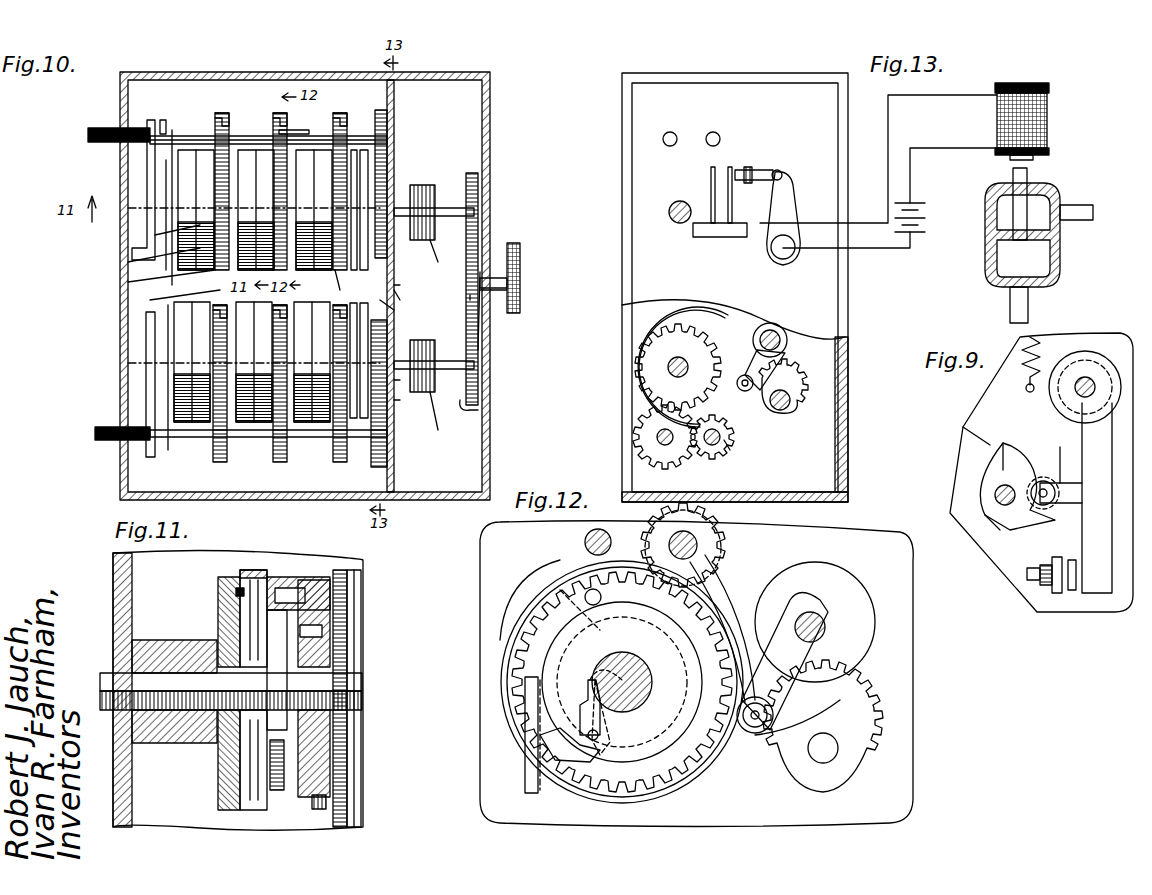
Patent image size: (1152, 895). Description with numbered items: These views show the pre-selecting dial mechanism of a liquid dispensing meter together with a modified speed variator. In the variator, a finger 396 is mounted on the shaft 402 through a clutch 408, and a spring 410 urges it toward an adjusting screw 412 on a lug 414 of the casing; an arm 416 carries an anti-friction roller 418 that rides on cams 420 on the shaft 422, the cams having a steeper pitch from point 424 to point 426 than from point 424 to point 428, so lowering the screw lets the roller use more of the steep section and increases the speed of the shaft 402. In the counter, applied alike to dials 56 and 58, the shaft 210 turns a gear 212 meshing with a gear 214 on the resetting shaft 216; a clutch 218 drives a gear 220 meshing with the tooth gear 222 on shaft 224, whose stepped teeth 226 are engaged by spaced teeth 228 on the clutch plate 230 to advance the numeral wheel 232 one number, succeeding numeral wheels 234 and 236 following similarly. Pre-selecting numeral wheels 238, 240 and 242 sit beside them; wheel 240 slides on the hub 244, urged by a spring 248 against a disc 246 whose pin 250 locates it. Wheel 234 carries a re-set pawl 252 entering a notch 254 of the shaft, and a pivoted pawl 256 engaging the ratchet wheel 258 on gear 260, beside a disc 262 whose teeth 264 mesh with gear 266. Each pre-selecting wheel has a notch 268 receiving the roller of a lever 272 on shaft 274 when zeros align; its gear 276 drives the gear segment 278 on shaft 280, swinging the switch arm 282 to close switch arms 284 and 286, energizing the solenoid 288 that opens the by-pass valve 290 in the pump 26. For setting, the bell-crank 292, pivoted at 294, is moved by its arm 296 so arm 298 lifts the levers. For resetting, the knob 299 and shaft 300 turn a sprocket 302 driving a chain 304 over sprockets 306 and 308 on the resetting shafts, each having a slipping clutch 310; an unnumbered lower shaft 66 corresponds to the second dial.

In FIG. 13, the pump 26 is at (1060, 200).
In FIG. 10, the dial 56 is at (195, 190).
In FIG. 10, the dial 58 is at (190, 347).
In FIG. 10, the lower shaft / gear 66 is at (108, 427).
In FIG. 13, the lower shaft / gear 66 is at (657, 437).
In FIG. 10, the shaft 210 is at (98, 128).
In FIG. 13, the shaft 210 is at (670, 132).
In FIG. 10, the gear 212 is at (394, 110).
In FIG. 10, the gear 214 is at (400, 160).
In FIG. 13, the gear 214 is at (714, 132).
In FIG. 10, the resetting shaft 216 is at (404, 208).
In FIG. 11, the resetting shaft 216 is at (165, 673).
In FIG. 12, the resetting shaft 216 is at (630, 668).
In FIG. 13, the resetting shaft 216 is at (678, 223).
In FIG. 10, the clutch 218 is at (394, 300).
In FIG. 10, the gear 220 is at (340, 275).
In FIG. 10, the tooth gear 222 is at (338, 120).
In FIG. 10, the shaft 224 is at (182, 135).
In FIG. 13, the shaft 224 is at (710, 445).
In FIG. 10, the stepped teeth 226 is at (270, 150).
In FIG. 10, the spaced teeth 228 is at (394, 318).
In FIG. 10, the clutch plate 230 is at (410, 282).
In FIG. 10, the numeral wheel 232 is at (394, 385).
In FIG. 10, the numeral wheel 234 is at (150, 320).
In FIG. 11, the numeral wheel 234 is at (295, 577).
In FIG. 10, the numeral wheel 236 is at (128, 262).
In FIG. 10, the pre-selecting numeral wheel 238 is at (394, 415).
In FIG. 10, the pre-selecting numeral wheel 240 is at (128, 282).
In FIG. 11, the pre-selecting numeral wheel 240 is at (247, 810).
In FIG. 13, the pre-selecting numeral wheel 240 is at (730, 405).
In FIG. 10, the pre-selecting numeral wheel 242 is at (155, 235).
In FIG. 11, the hub 244 is at (245, 715).
In FIG. 11, the disc 246 is at (218, 788).
In FIG. 11, the spring 248 is at (240, 575).
In FIG. 11, the pin 250 is at (236, 592).
In FIG. 11, the re-set pawl 252 is at (280, 760).
In FIG. 12, the re-set pawl 252 is at (588, 690).
In FIG. 12, the notch 254 is at (592, 680).
In FIG. 11, the pivoted pawl 256 is at (330, 620).
In FIG. 12, the pivoted pawl 256 is at (640, 590).
In FIG. 11, the ratchet wheel 258 is at (347, 717).
In FIG. 12, the ratchet wheel 258 is at (690, 770).
In FIG. 10, the gear 260 is at (292, 150).
In FIG. 11, the gear 260 is at (316, 810).
In FIG. 12, the gear 260 is at (638, 785).
In FIG. 11, the disc 262 is at (361, 747).
In FIG. 12, the disc 262 is at (598, 750).
In FIG. 12, the teeth 264 is at (555, 742).
In FIG. 10, the gear 266 is at (305, 440).
In FIG. 13, the gear 266 is at (728, 445).
In FIG. 12, the notch 268 is at (757, 695).
In FIG. 12, the lever 272 is at (812, 652).
In FIG. 13, the lever 272 is at (790, 355).
In FIG. 12, the shaft 274 is at (812, 615).
In FIG. 12, the gear 276 is at (855, 612).
In FIG. 13, the gear 276 is at (795, 322).
In FIG. 12, the gear segment 278 is at (850, 712).
In FIG. 13, the gear segment 278 is at (805, 382).
In FIG. 12, the shaft 280 is at (838, 748).
In FIG. 13, the shaft 280 is at (790, 402).
In FIG. 13, the switch arm 282 is at (788, 195).
In FIG. 13, the switch arm 284 is at (705, 172).
In FIG. 13, the switch arm 286 is at (732, 170).
In FIG. 13, the solenoid 288 is at (1049, 105).
In FIG. 12, the by-pass valve 290 is at (548, 785).
In FIG. 13, the by-pass valve 290 is at (1030, 215).
In FIG. 10, the bell-crank 292 is at (147, 170).
In FIG. 12, the bell-crank 292 is at (540, 583).
In FIG. 10, the pivot 294 is at (163, 120).
In FIG. 12, the arm 296 is at (525, 775).
In FIG. 12, the arm 298 is at (730, 595).
In FIG. 10, the knob 299 is at (512, 243).
In FIG. 10, the shaft 300 is at (488, 300).
In FIG. 10, the sprocket 302 is at (466, 290).
In FIG. 10, the chain 304 is at (482, 340).
In FIG. 10, the sprocket 306 is at (478, 175).
In FIG. 10, the sprocket 308 is at (480, 408).
In FIG. 10, the clutch 310 is at (450, 345).
In FIG. 9, the finger 396 is at (1090, 593).
In FIG. 9, the shaft 402 is at (1090, 380).
In FIG. 9, the clutch 408 is at (1075, 355).
In FIG. 9, the spring 410 is at (1022, 337).
In FIG. 9, the adjusting screw 412 is at (1040, 580).
In FIG. 9, the lug 414 is at (1060, 557).
In FIG. 9, the arm 416 is at (1059, 455).
In FIG. 9, the anti-friction roller 418 is at (1045, 480).
In FIG. 9, the cam 420 is at (970, 508).
In FIG. 9, the shaft 422 is at (995, 492).
In FIG. 9, the cam point 424 is at (1003, 468).
In FIG. 9, the cam point 426 is at (1000, 530).
In FIG. 9, the cam point 428 is at (975, 432).